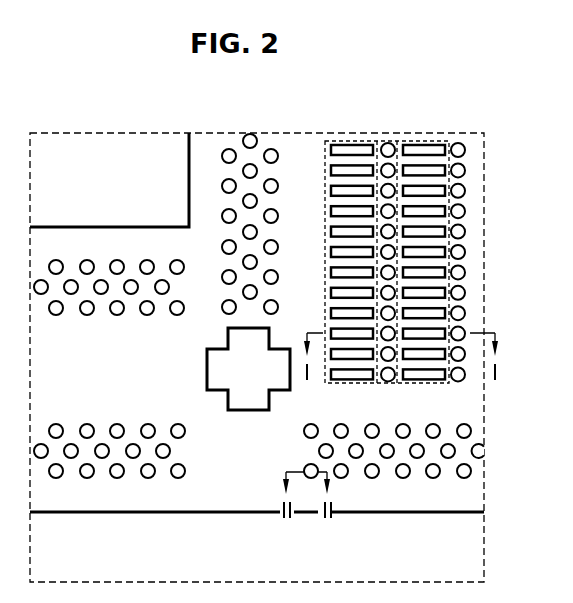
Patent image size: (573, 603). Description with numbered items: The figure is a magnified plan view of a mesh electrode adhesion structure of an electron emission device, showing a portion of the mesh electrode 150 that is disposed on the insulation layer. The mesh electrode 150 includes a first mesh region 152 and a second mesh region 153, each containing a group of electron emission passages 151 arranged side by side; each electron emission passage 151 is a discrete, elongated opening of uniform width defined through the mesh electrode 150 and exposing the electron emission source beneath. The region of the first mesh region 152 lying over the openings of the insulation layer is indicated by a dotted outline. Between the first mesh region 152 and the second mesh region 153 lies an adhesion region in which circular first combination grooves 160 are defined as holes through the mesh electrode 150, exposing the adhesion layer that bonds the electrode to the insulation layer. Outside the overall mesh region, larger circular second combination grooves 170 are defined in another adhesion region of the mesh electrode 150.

The mesh electrode 150 is at (306, 150).
The electron emission passage 151 is at (428, 373).
The first mesh region 152 is at (352, 140).
The second mesh region 153 is at (421, 140).
The first combination groove 160 is at (465, 150).
The second combination groove 170 is at (471, 471).